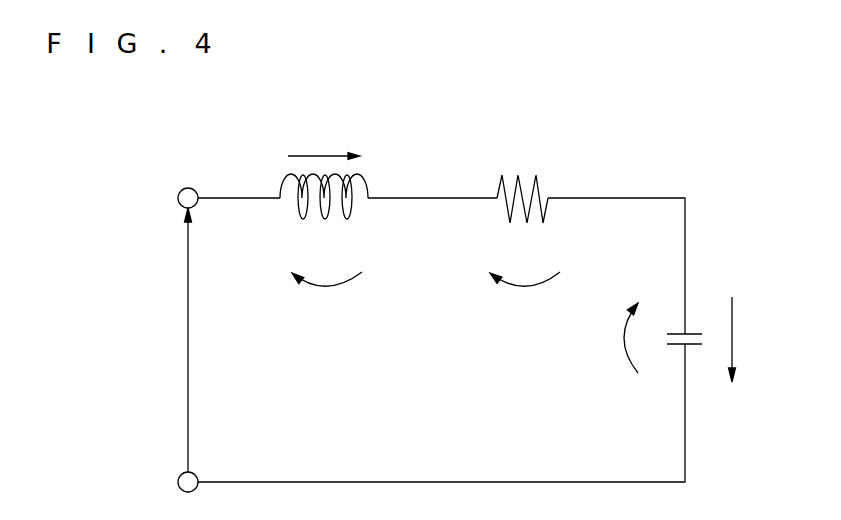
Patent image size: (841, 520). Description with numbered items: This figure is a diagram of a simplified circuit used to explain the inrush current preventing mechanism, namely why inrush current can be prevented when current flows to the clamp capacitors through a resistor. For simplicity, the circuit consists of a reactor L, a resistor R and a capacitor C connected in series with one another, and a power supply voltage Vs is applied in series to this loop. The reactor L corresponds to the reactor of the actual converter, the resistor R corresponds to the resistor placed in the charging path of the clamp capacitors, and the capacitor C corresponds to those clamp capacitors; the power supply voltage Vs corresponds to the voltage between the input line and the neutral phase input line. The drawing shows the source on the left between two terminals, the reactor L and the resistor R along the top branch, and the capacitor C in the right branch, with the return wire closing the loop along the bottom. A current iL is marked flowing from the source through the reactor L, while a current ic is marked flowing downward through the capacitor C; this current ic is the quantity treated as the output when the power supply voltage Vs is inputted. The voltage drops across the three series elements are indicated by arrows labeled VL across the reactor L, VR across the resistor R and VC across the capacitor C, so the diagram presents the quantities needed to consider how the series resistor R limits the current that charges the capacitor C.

The power supply voltage Vs is at (174, 340).
The reactor L is at (324, 208).
The inductor current iL is at (324, 145).
The resistor R is at (522, 213).
The inductor voltage VL is at (327, 293).
The resistor voltage VR is at (525, 293).
The capacitor C is at (681, 327).
The capacitor voltage VC is at (612, 338).
The current flowing through the capacitor ic is at (746, 339).